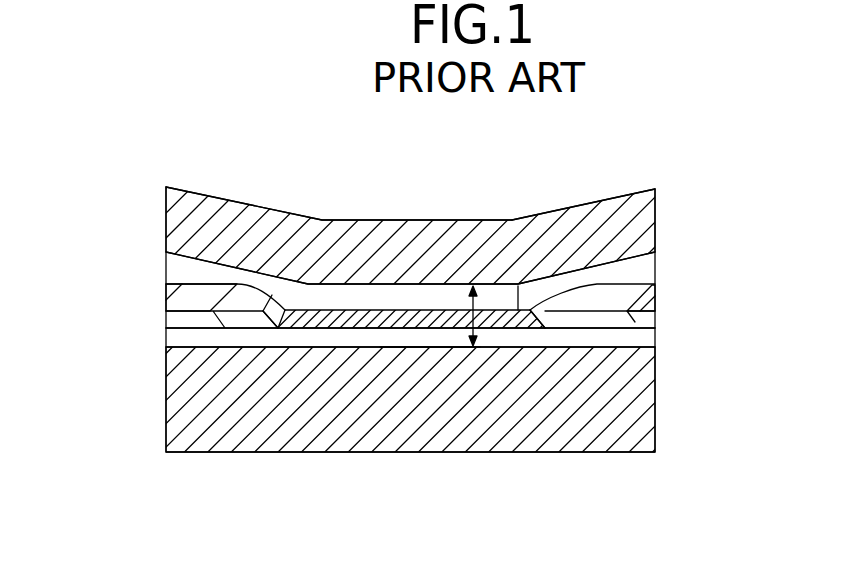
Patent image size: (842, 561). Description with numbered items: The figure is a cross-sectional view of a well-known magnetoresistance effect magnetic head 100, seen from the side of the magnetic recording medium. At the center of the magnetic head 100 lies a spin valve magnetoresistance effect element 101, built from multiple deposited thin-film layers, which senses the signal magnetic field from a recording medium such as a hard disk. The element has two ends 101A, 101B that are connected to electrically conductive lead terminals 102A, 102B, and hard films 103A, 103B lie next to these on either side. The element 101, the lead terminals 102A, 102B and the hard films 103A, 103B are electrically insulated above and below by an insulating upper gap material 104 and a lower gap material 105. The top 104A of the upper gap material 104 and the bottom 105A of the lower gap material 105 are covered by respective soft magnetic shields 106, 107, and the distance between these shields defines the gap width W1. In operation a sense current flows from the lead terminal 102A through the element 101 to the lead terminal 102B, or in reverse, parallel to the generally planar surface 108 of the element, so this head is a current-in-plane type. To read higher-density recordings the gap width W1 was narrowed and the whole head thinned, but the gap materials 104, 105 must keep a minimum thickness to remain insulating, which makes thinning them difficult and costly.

The magnetoresistance effect magnetic head 100 is at (338, 160).
The magnetoresistance effect element 101 is at (370, 310).
The end of magnetoresistance effect element 101A is at (508, 312).
The end of magnetoresistance effect element 101B is at (290, 310).
The lead terminal 102A is at (648, 302).
The lead terminal 102B is at (165, 297).
The hard film 103A is at (653, 322).
The hard film 103B is at (165, 318).
The upper gap material 104 is at (640, 267).
The top of upper gap material 104A is at (415, 226).
The lower gap material 105 is at (643, 340).
The bottom of lower gap material 105A is at (435, 340).
The soft magnetic shield 106 is at (652, 193).
The soft magnetic shield 107 is at (653, 447).
The planar surface of element 108 is at (532, 230).
The gap width W1 is at (492, 286).